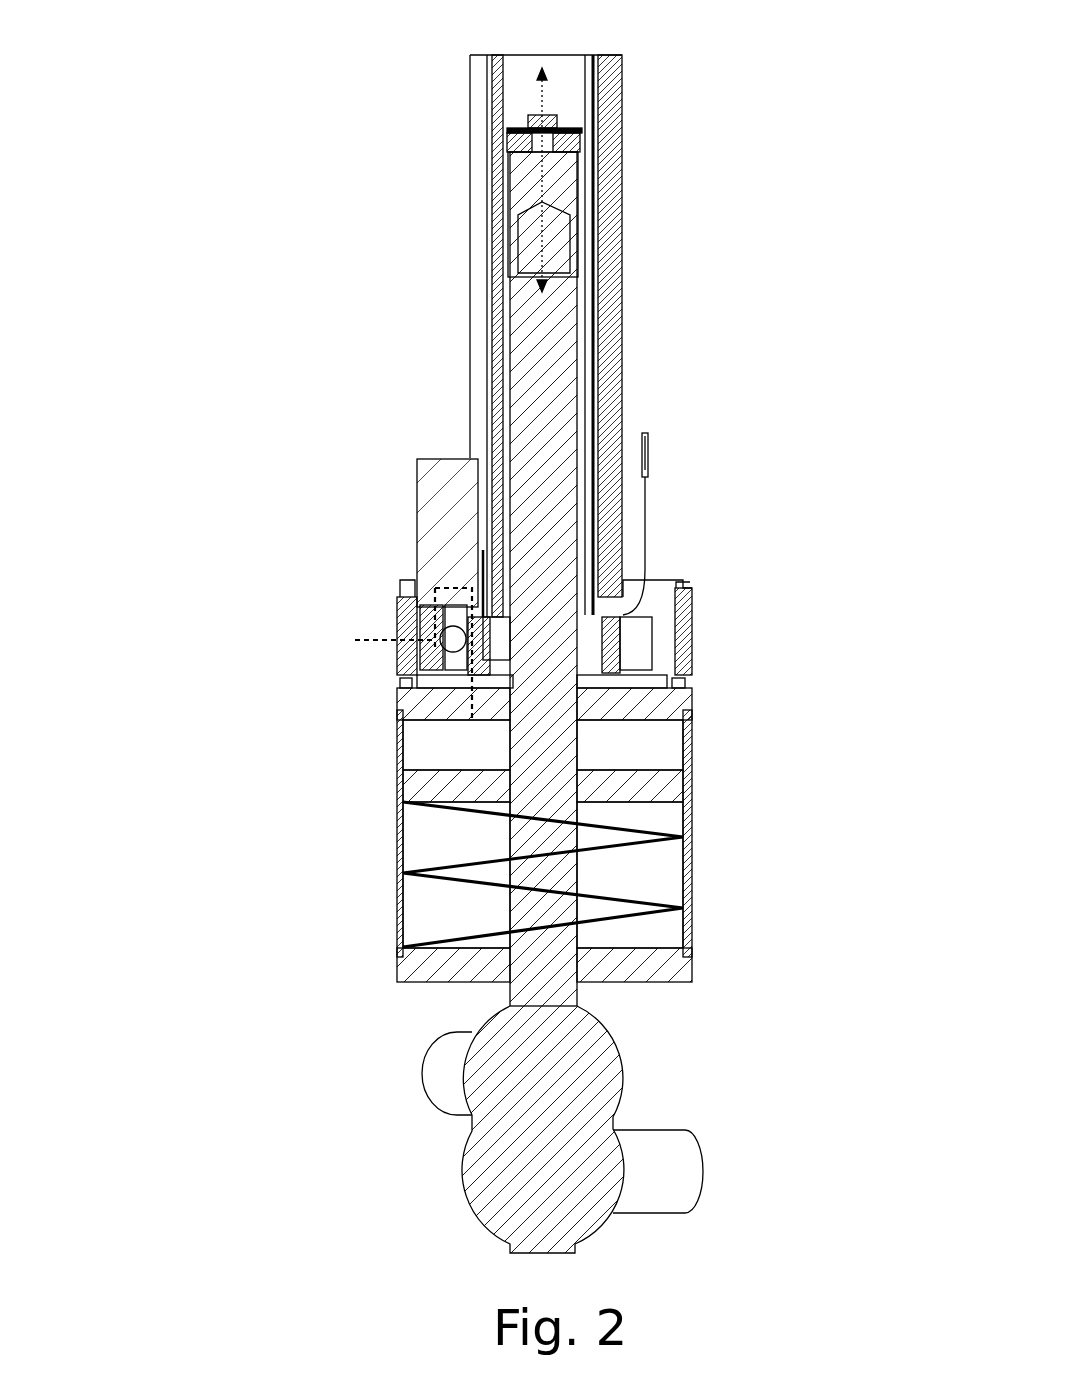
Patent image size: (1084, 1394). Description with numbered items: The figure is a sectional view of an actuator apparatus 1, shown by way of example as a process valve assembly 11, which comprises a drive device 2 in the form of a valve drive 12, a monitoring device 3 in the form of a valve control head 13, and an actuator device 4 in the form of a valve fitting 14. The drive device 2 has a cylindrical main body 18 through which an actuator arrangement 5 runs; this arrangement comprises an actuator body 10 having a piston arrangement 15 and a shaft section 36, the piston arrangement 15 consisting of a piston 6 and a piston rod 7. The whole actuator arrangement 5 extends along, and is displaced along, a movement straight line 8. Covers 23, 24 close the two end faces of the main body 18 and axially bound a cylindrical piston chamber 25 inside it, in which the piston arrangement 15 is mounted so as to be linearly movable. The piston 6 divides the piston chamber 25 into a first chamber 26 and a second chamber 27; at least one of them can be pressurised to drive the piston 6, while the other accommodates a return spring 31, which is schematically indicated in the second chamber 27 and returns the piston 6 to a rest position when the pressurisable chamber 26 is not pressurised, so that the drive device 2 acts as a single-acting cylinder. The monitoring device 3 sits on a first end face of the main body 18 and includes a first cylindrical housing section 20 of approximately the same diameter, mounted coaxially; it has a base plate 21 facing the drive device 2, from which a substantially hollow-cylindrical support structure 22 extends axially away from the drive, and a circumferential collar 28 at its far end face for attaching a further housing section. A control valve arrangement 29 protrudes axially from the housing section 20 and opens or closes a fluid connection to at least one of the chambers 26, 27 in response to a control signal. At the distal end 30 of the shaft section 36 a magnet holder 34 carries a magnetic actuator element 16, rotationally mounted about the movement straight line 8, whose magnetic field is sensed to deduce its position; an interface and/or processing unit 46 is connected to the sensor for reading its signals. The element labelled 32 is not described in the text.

The actuator apparatus 1 is at (502, 640).
The process valve assembly 11 is at (300, 183).
The drive device 2 is at (509, 814).
The valve drive 12 is at (305, 833).
The monitoring device 3 is at (481, 615).
The valve control head 13 is at (290, 580).
The actuator device 4 is at (506, 1065).
The valve fitting 14 is at (385, 1158).
The actuator arrangement 5 is at (537, 861).
The piston arrangement 15 is at (500, 848).
The piston 6 is at (662, 790).
The piston rod 7 is at (543, 877).
The movement straight line 8 is at (545, 258).
The actuator body 10 is at (637, 579).
The shaft section 36 is at (568, 356).
The magnetic actuator element 16 is at (575, 145).
The cylindrical main body 18 is at (688, 880).
The first cylindrical housing section 20 is at (690, 612).
The base plate 21 is at (660, 672).
The support structure 22 is at (610, 92).
The cover 23 is at (668, 705).
The cover 24 is at (655, 970).
The piston chamber 25 is at (670, 820).
The first chamber 26 is at (420, 747).
The second chamber 27 is at (425, 920).
The circumferential collar 28 is at (683, 588).
The control valve arrangement 29 is at (425, 505).
The distal end 30 is at (457, 172).
The return spring 31 is at (653, 913).
The bearing 32 is at (390, 635).
The magnet holder 34 is at (572, 200).
The interface and/or processing unit 46 is at (650, 470).